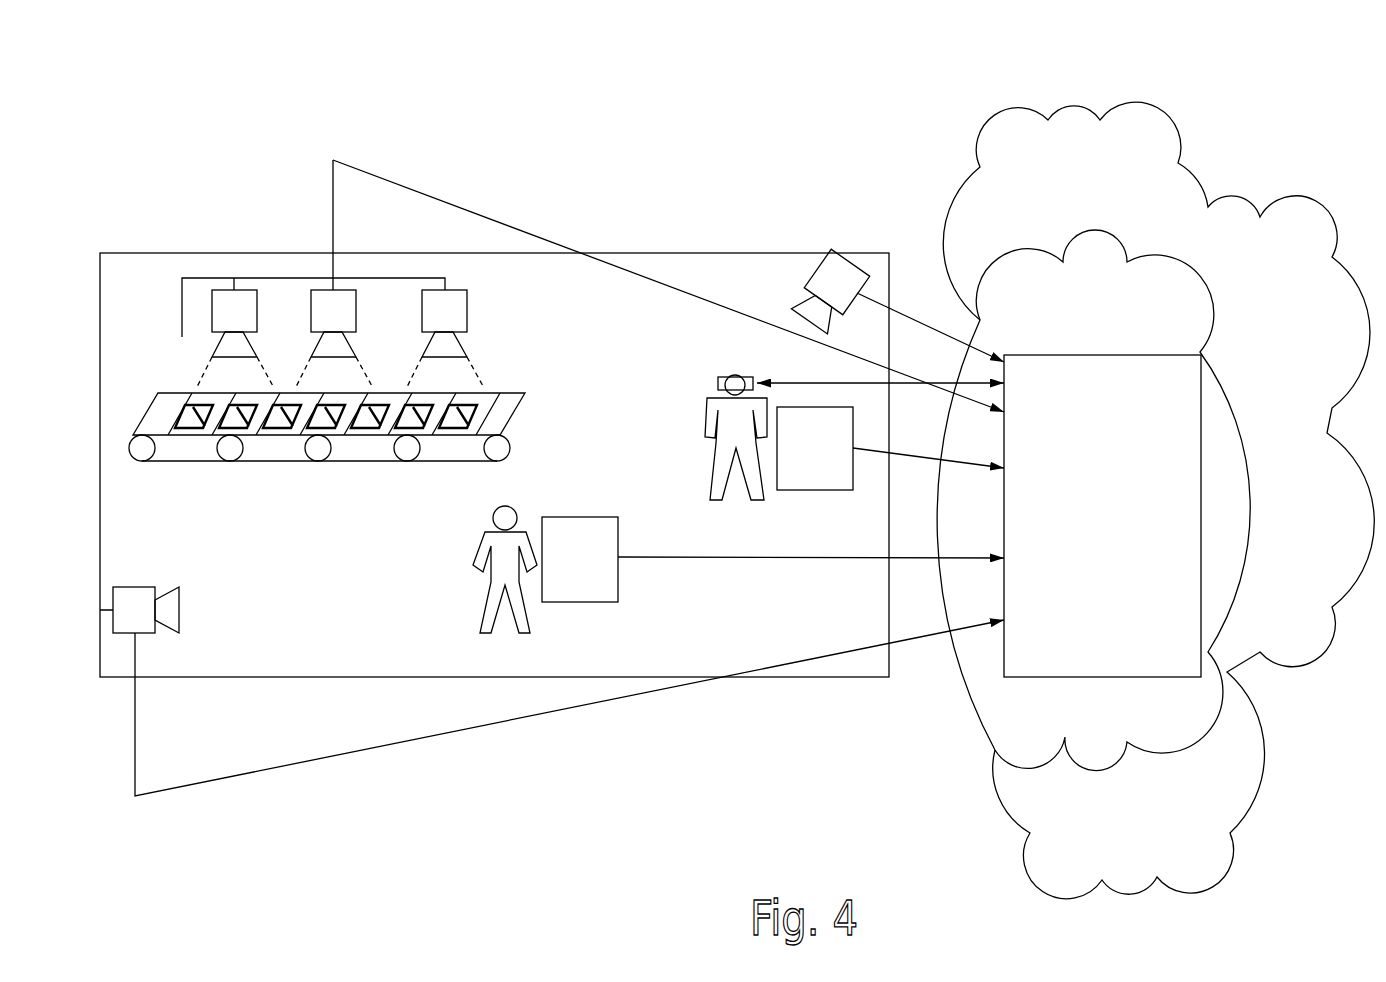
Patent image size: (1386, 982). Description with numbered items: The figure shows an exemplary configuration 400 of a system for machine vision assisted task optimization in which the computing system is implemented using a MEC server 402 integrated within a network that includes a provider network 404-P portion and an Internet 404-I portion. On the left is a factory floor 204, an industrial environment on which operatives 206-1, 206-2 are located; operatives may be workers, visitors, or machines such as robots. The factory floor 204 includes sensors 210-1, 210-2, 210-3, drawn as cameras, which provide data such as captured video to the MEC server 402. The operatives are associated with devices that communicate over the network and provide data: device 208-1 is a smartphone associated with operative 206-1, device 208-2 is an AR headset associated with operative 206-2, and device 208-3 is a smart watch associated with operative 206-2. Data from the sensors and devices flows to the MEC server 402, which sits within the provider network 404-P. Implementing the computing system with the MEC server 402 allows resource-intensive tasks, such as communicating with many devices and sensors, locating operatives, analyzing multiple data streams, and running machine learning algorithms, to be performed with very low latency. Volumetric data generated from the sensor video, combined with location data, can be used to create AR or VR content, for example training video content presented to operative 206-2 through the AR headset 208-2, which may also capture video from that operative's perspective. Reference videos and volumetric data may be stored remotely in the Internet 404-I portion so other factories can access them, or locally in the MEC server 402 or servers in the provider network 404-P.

The configuration 400 is at (178, 82).
The factory floor 204 is at (190, 253).
The sensor 210-1 is at (180, 610).
The sensor 210-2 is at (820, 273).
The sensor 210-3 is at (467, 293).
The operative 206-1 is at (480, 570).
The operative 206-2 is at (707, 440).
The device 208-1 is at (555, 584).
The device 208-2 is at (718, 384).
The device 208-3 is at (790, 475).
The MEC server 402 is at (1118, 539).
The provider network 404-P is at (1120, 334).
The Internet 404-I is at (1271, 574).